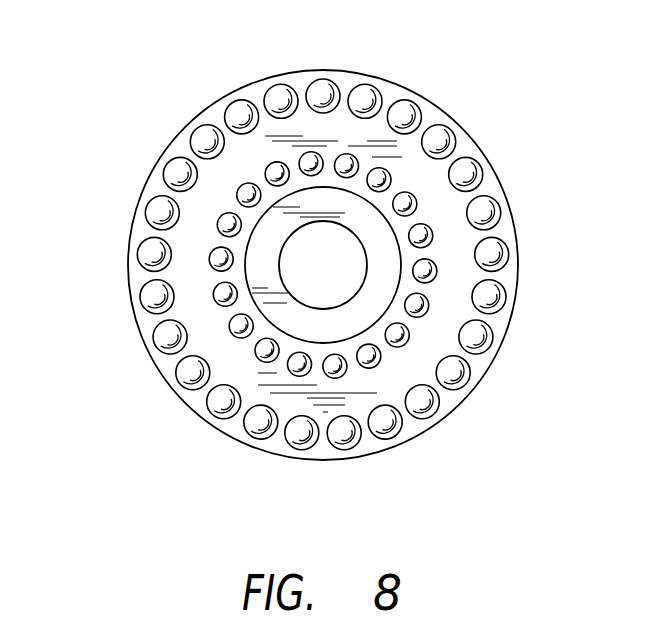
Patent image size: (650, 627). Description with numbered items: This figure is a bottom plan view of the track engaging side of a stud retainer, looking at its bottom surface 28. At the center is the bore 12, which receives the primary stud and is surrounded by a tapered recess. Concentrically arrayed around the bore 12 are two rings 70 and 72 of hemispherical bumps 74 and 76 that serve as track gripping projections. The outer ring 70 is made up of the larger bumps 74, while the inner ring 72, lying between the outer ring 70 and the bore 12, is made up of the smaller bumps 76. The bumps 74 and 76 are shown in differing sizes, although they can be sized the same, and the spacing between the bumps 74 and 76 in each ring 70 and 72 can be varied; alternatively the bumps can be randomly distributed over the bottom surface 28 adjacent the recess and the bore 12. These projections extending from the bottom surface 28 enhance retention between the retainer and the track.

The central bore 12 is at (345, 223).
The bottom surface 28 is at (317, 236).
The outer ring 70 is at (269, 231).
The inner ring 72 is at (354, 235).
The hemispherical bumps 74 is at (145, 250).
The hemispherical bumps 76 is at (228, 217).